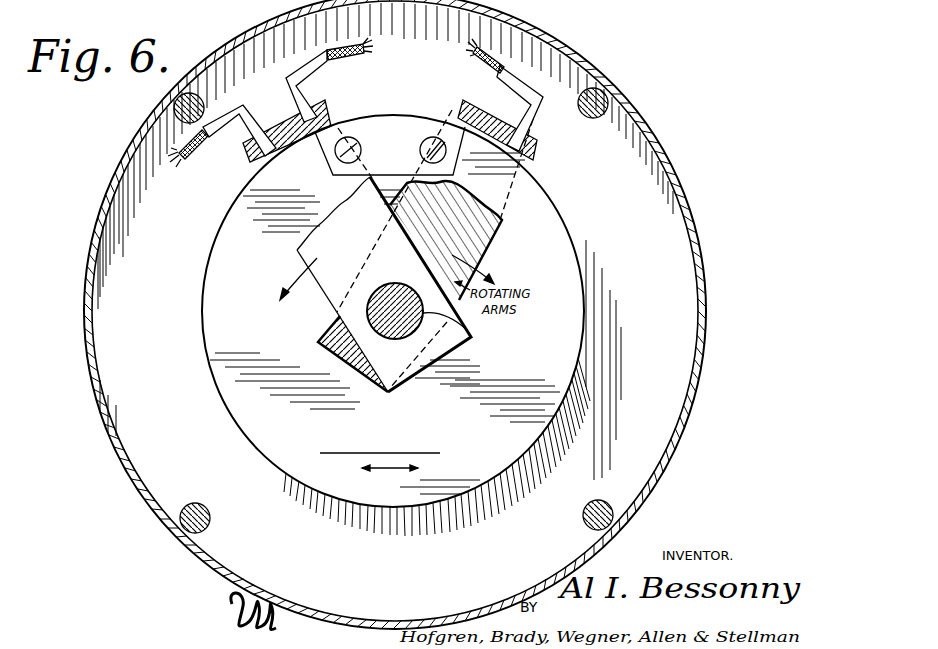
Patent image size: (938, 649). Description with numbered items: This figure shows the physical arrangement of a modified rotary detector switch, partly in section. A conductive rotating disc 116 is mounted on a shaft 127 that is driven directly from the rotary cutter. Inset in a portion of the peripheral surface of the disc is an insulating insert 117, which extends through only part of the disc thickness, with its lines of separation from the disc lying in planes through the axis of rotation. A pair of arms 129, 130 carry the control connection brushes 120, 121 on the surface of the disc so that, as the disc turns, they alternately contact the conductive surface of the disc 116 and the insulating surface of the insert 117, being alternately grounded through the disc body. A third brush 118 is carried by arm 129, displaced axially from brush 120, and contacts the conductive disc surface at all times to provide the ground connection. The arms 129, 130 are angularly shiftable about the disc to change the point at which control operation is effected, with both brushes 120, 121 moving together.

The rotatable disc 116 is at (578, 222).
The insulating insert 117 is at (378, 112).
The ground connection brush 118 is at (290, 95).
The brush 120 is at (231, 141).
The brush 121 is at (533, 127).
The shaft 127 is at (472, 336).
The arm 129 is at (322, 278).
The arm 130 is at (487, 243).